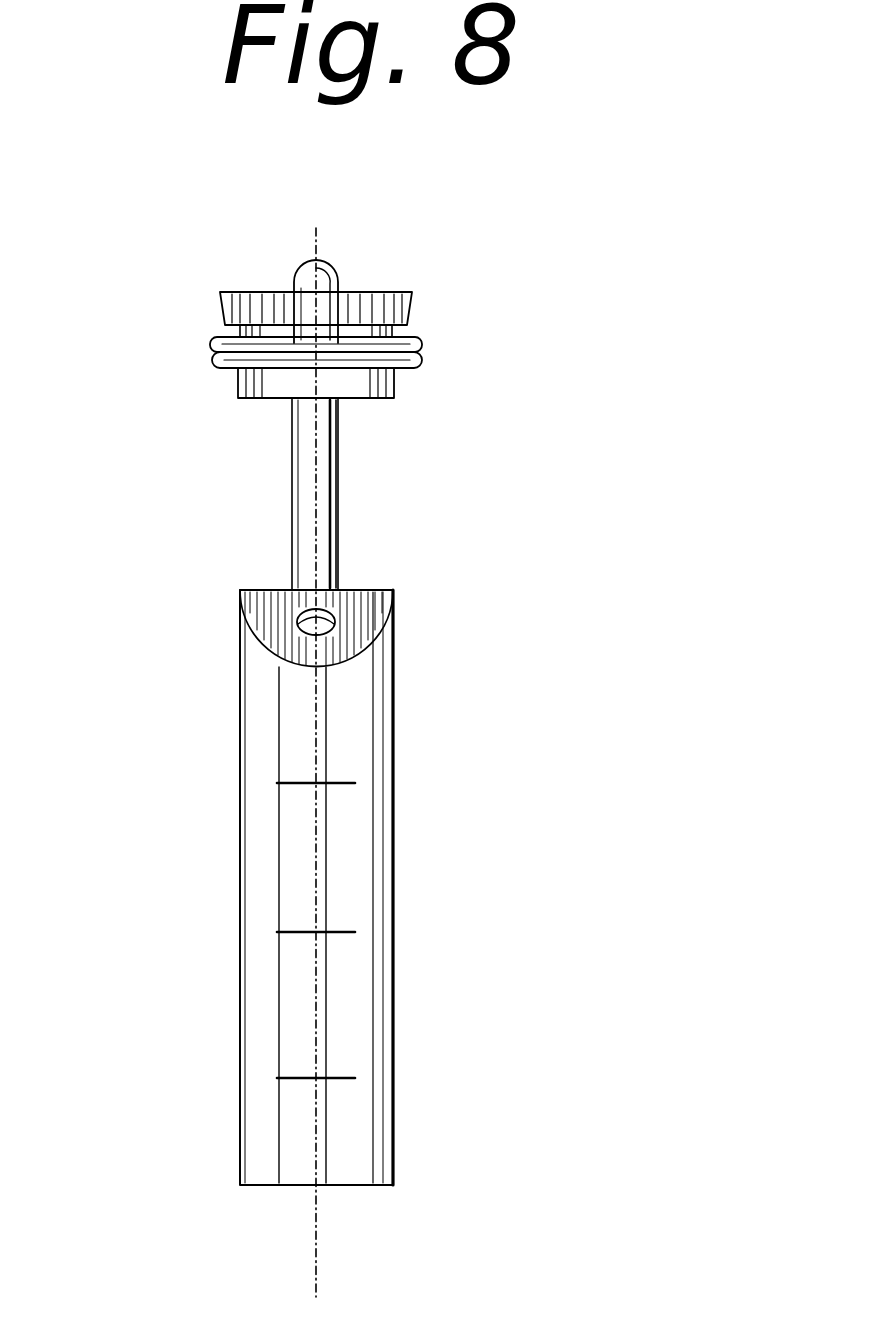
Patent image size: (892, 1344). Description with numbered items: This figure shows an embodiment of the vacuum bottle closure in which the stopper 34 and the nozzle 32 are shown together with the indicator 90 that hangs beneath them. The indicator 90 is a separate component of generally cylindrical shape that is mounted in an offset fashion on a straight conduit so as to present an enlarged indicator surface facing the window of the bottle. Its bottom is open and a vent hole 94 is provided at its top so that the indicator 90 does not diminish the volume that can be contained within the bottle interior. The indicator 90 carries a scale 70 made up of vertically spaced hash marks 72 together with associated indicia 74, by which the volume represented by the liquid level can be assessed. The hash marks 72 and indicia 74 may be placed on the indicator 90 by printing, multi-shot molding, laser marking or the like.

The nozzle 32 is at (337, 273).
The stopper 34 is at (412, 305).
The scale 70 is at (386, 855).
The hash marks 72 is at (278, 784).
The indicia 74 is at (368, 753).
The indicator surface 90 is at (288, 847).
The vent hole 94 is at (333, 615).